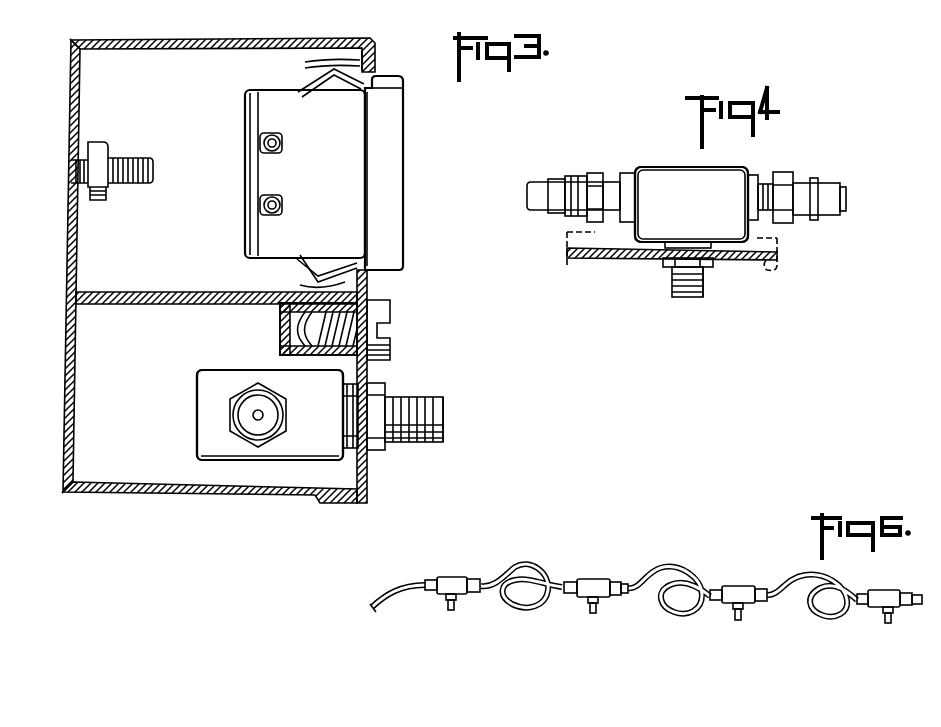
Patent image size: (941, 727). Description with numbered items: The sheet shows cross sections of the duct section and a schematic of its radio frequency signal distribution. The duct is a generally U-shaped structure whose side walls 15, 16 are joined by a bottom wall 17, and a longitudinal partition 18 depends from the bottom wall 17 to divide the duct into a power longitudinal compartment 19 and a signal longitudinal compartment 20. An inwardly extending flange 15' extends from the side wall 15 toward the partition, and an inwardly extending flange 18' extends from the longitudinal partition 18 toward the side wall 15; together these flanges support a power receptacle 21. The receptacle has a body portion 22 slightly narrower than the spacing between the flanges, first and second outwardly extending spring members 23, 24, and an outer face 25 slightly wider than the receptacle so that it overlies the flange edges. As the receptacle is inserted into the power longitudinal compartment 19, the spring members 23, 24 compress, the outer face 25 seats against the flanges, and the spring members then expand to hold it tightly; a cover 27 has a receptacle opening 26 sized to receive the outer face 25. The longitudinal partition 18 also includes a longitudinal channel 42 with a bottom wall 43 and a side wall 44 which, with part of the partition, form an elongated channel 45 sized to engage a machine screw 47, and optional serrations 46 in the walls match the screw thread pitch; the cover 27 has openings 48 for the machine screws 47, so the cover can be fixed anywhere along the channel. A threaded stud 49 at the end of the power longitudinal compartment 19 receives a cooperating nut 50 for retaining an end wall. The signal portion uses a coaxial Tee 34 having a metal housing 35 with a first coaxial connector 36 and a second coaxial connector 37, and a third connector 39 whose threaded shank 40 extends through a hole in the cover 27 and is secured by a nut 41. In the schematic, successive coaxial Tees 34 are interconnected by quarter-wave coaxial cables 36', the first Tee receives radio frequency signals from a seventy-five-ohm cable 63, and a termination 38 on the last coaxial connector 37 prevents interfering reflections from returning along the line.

In FIG. 3, the side wall 15 is at (223, 60).
In FIG. 3, the inwardly extending flange 15' is at (319, 72).
In FIG. 3, the side wall 16 is at (139, 483).
In FIG. 3, the bottom wall 17 is at (71, 102).
In FIG. 3, the longitudinal partition 18 is at (216, 276).
In FIG. 3, the inwardly extending flange 18' is at (314, 275).
In FIG. 3, the power longitudinal compartment 19 is at (200, 188).
In FIG. 3, the signal longitudinal compartment 20 is at (190, 347).
In FIG. 3, the power receptacle 21 is at (406, 181).
In FIG. 3, the body portion 22 is at (331, 172).
In FIG. 3, the first outwardly extending spring member 23 is at (331, 85).
In FIG. 3, the second outwardly extending spring member 24 is at (326, 266).
In FIG. 3, the outer face 25 is at (394, 128).
In FIG. 3, the receptacle opening 26 is at (403, 82).
In FIG. 3, the cover 27 is at (376, 58).
In FIG. 4, the cover 27 is at (778, 266).
In FIG. 3, the coaxial Tee 34 is at (197, 400).
In FIG. 4, the coaxial Tee 34 is at (706, 206).
In FIG. 6, the coaxial Tee 34 is at (462, 595).
In FIG. 3, the metal housing 35 is at (205, 420).
In FIG. 4, the metal housing 35 is at (660, 167).
In FIG. 4, the first coaxial connector 36 is at (619, 178).
In FIG. 3, the coaxial cable 36' is at (258, 433).
In FIG. 4, the coaxial cable 36' is at (565, 181).
In FIG. 6, the coaxial cable 36' is at (669, 592).
In FIG. 4, the second coaxial connector 37 is at (763, 180).
In FIG. 4, the termination 38 is at (815, 183).
In FIG. 6, the termination 38 is at (908, 608).
In FIG. 3, the third connector 39 is at (446, 409).
In FIG. 4, the third connector 39 is at (704, 290).
In FIG. 3, the threaded shank 40 is at (421, 397).
In FIG. 4, the threaded shank 40 is at (672, 286).
In FIG. 3, the nut 41 is at (385, 383).
In FIG. 4, the nut 41 is at (663, 262).
In FIG. 3, the longitudinal channel 42 is at (281, 336).
In FIG. 3, the bottom wall 43 is at (279, 322).
In FIG. 3, the side wall 44 is at (335, 416).
In FIG. 3, the elongated channel 45 is at (292, 350).
In FIG. 3, the serrations 46 is at (305, 358).
In FIG. 3, the machine screw 47 is at (392, 312).
In FIG. 3, the opening 48 is at (368, 304).
In FIG. 3, the threaded stud 49 is at (136, 158).
In FIG. 3, the nut 50 is at (100, 142).
In FIG. 6, the 75-ohm cable 63 is at (403, 600).